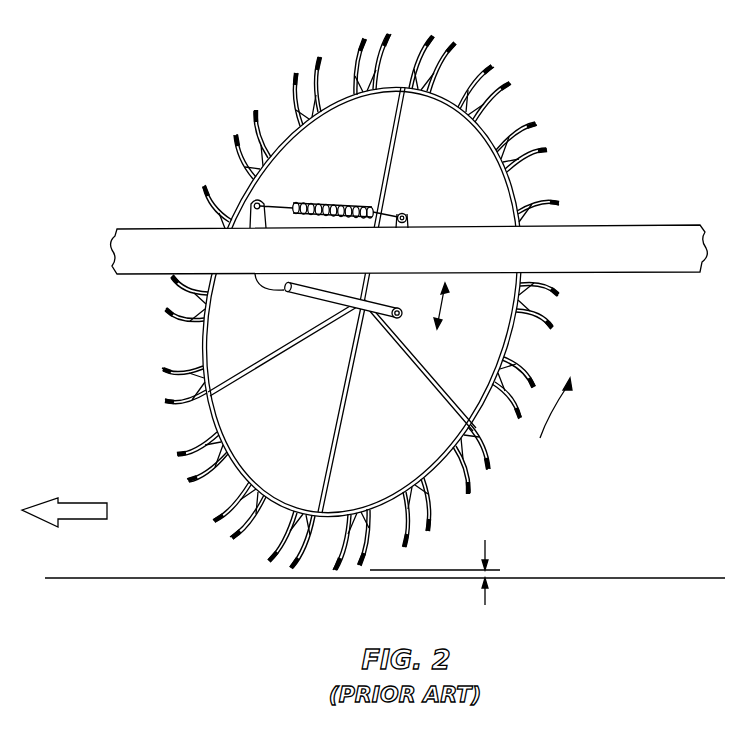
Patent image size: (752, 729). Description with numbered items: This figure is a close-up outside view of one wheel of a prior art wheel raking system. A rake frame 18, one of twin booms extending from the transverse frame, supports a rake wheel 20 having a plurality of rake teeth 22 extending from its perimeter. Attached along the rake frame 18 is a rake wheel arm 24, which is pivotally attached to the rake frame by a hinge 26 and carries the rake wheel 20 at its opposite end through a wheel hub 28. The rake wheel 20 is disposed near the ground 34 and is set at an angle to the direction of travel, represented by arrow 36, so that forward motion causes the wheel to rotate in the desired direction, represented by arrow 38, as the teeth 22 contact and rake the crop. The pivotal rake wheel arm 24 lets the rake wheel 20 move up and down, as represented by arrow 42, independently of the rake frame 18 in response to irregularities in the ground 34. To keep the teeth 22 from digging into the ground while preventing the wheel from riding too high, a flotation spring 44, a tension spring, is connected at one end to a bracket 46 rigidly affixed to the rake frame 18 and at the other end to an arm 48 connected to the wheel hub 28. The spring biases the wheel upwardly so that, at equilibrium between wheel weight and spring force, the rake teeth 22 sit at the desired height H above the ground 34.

The rake frame 18 is at (620, 243).
The rake wheel 20 is at (447, 160).
The rake teeth 22 is at (231, 150).
The rake wheel arm 24 is at (200, 370).
The hinge 26 is at (273, 285).
The wheel hub 28 is at (397, 327).
The ground 34 is at (590, 578).
The direction of travel arrow 36 is at (75, 508).
The rotation direction arrow 38 is at (560, 410).
The up and down motion arrow 42 is at (443, 305).
The flotation spring 44 is at (330, 206).
The bracket 46 is at (247, 210).
The arm 48 is at (408, 216).
The height H is at (435, 583).